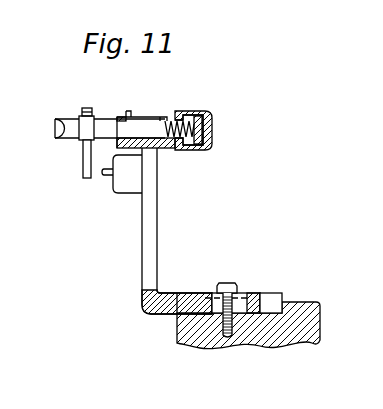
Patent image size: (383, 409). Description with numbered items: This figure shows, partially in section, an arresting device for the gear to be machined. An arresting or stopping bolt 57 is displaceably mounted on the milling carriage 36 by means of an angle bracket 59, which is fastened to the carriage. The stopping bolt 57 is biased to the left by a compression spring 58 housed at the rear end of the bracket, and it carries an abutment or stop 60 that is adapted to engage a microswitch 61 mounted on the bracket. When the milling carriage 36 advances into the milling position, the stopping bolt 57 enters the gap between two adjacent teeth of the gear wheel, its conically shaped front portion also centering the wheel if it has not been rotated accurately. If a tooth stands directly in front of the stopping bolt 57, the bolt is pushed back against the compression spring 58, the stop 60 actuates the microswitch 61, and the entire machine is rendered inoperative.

The milling carriage 36 is at (291, 304).
The stopping bolt 57 is at (55, 125).
The compression spring 58 is at (200, 111).
The angle bracket 59 is at (150, 222).
The stop 60 is at (85, 160).
The microswitch 61 is at (124, 183).